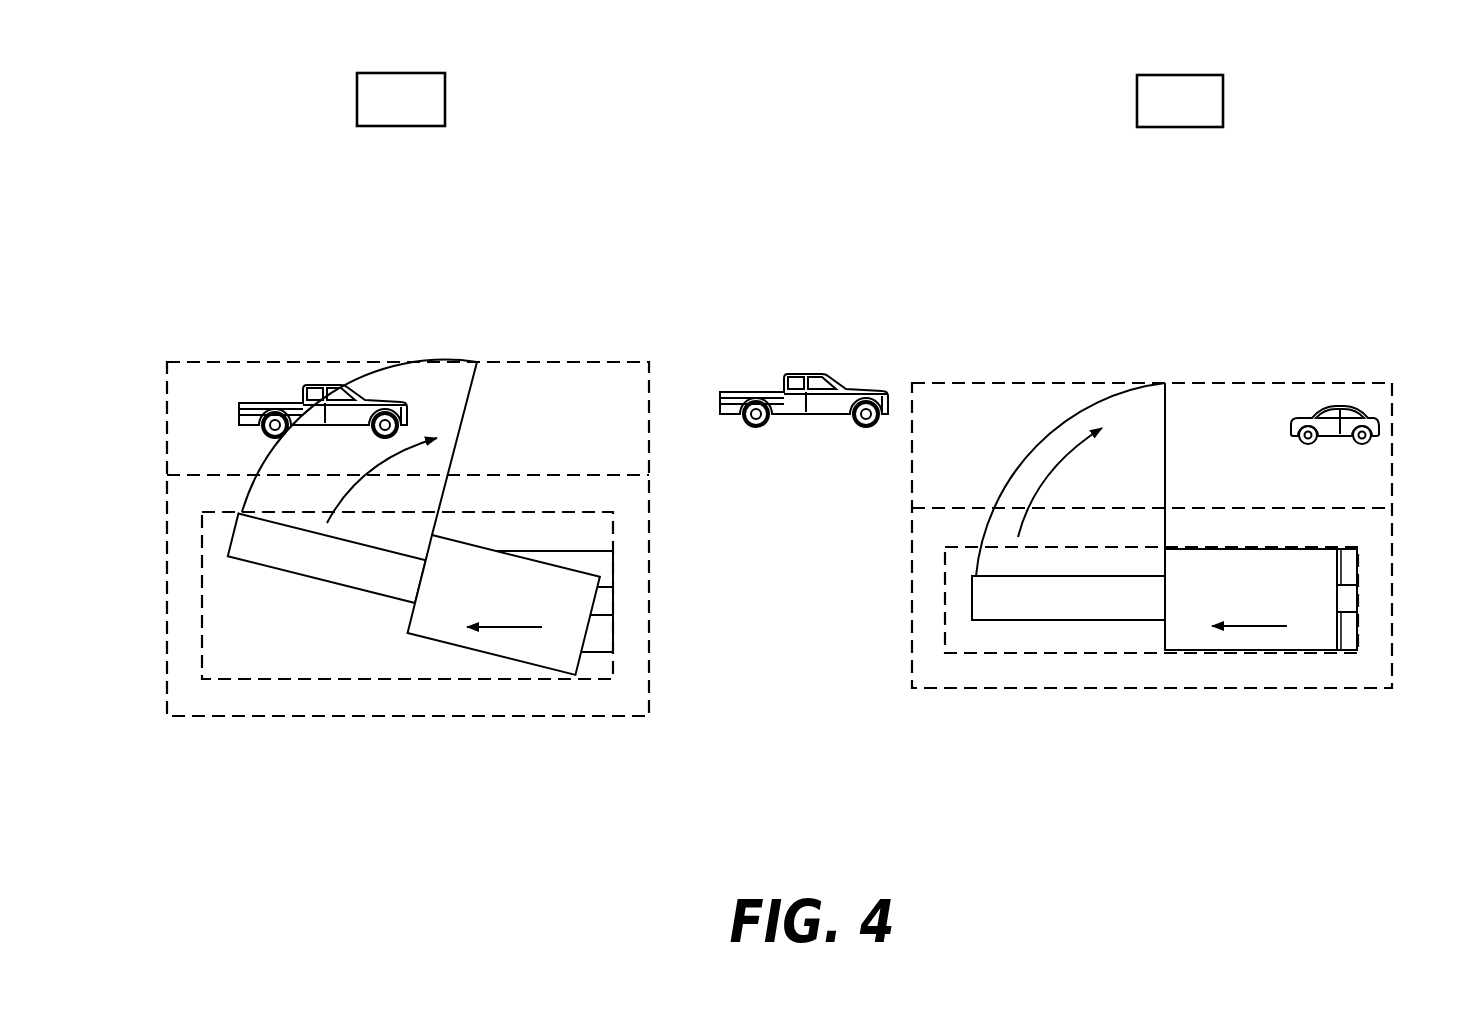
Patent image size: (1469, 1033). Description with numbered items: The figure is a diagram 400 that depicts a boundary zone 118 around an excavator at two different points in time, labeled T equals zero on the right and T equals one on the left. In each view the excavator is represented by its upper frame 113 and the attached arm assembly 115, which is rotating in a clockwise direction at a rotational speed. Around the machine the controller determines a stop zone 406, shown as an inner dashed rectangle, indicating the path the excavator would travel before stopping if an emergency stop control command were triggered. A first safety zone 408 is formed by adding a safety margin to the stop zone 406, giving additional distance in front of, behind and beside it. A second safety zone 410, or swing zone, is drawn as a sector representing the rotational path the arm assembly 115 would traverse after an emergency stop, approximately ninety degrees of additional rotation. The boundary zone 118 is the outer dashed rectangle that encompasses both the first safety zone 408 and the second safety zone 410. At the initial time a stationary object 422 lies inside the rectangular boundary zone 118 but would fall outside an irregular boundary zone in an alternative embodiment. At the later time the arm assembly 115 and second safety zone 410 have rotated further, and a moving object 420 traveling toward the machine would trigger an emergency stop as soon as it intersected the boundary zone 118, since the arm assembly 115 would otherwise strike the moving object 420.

The diagram 400 is at (817, 128).
The stop zone 406 is at (200, 548).
The first safety zone 408 is at (562, 467).
The second safety zone 410 is at (400, 373).
The upper frame 113 is at (495, 615).
The arm assembly 115 is at (327, 573).
The boundary zone 118 is at (655, 368).
The moving object 420 is at (255, 385).
The stationary object 422 is at (1335, 392).